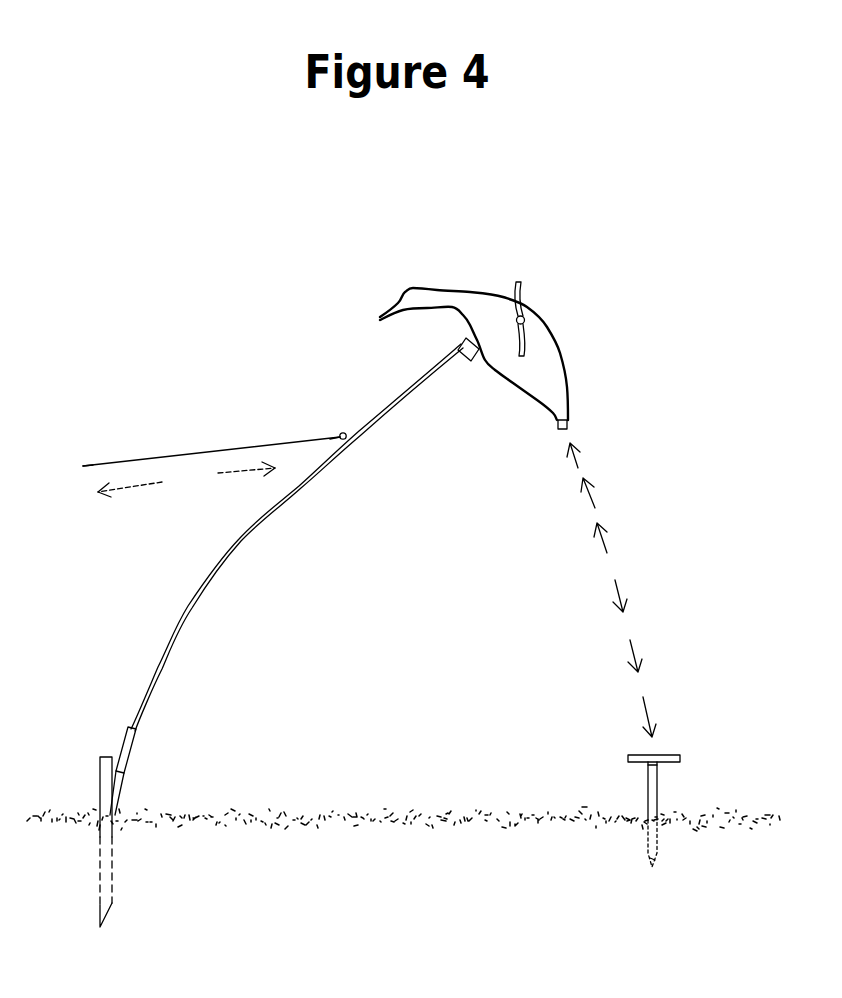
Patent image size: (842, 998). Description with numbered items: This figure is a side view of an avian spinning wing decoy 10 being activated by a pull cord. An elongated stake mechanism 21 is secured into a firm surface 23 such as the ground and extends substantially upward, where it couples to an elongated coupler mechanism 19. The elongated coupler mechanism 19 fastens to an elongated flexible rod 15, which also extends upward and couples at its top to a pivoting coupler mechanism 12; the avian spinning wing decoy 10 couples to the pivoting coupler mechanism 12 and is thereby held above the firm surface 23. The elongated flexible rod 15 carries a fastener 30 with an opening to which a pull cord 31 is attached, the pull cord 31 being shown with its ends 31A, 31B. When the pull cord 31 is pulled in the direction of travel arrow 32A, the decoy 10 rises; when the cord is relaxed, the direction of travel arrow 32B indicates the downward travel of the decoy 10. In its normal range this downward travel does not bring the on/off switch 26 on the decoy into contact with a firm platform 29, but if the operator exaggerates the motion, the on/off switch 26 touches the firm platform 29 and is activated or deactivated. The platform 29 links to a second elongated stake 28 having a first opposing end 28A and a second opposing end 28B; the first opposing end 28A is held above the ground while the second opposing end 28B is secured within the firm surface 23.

The avian spinning wing decoy 10 is at (487, 313).
The pivoting coupler mechanism 12 is at (477, 356).
The elongated flexible rod 15 is at (190, 610).
The elongated coupler mechanism 19 is at (130, 750).
The elongated stake mechanism 21 is at (115, 815).
The firm surface 23 is at (175, 830).
The on/off switch 26 is at (568, 425).
The second elongated stake 28 is at (648, 795).
The first opposing end 28A is at (657, 770).
The second opposing end 28B is at (655, 865).
The firm platform 29 is at (645, 755).
The fastener 30 is at (343, 432).
The pull cord 31 is at (220, 448).
The arm first end 31A is at (325, 436).
The arm second end 31B is at (85, 462).
The direction of travel arrow 32A is at (128, 487).
The direction of travel arrow 32B is at (252, 475).